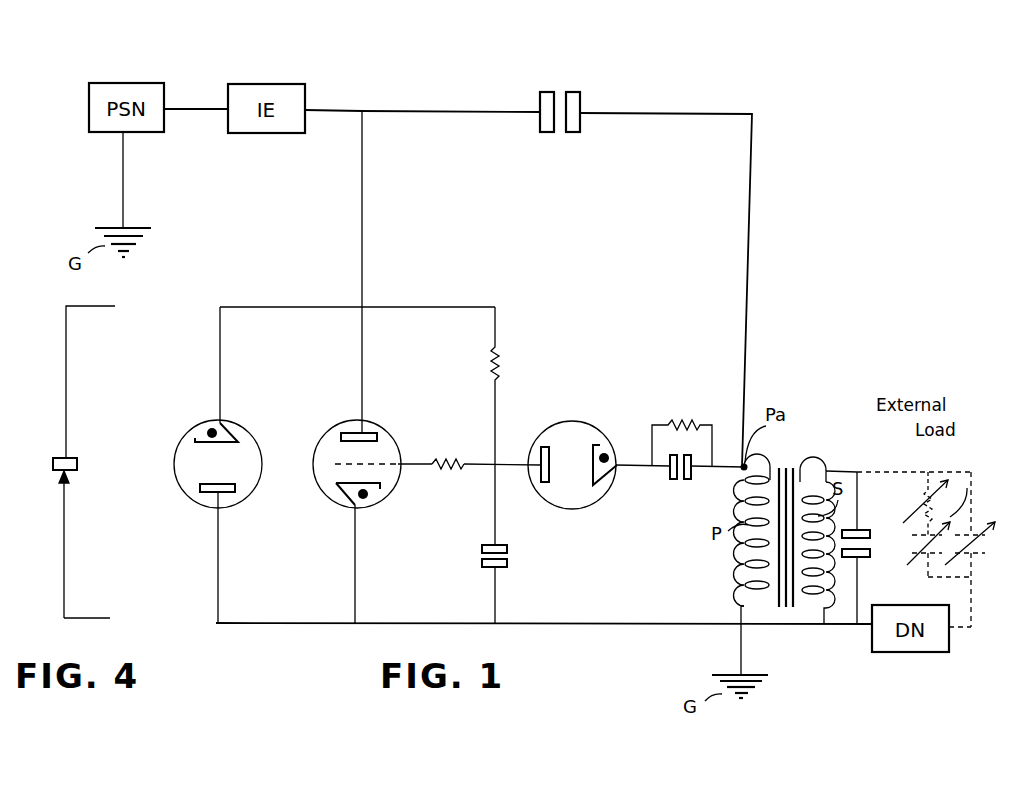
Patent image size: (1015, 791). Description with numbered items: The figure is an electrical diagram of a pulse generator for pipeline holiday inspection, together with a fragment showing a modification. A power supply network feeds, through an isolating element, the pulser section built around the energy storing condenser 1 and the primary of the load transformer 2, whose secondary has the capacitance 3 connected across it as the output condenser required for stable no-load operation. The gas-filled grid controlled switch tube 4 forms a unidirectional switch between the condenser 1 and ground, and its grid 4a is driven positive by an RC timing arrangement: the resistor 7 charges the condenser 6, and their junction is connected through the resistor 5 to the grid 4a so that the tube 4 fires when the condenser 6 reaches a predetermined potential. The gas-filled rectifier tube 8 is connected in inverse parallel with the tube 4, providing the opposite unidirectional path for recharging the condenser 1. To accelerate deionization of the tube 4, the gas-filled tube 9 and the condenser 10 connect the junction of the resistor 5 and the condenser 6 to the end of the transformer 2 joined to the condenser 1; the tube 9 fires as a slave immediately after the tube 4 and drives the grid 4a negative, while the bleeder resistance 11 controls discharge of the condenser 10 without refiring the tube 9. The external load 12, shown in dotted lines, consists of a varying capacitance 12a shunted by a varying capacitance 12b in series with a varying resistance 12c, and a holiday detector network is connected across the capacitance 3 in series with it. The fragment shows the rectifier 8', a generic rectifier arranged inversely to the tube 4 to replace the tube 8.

In FIG. 1, the energy storing condenser 1 is at (560, 135).
In FIG. 1, the load transformer 2 is at (790, 460).
In FIG. 1, the capacitance 3 is at (880, 540).
In FIG. 1, the gas-filled grid controlled switch tube 4 is at (393, 428).
In FIG. 1, the grid 4a is at (335, 462).
In FIG. 1, the resistor 5 is at (448, 455).
In FIG. 1, the condenser 6 is at (475, 556).
In FIG. 1, the resistor 7 is at (492, 363).
In FIG. 1, the gas-filled rectifier tube 8 is at (211, 510).
In FIG. 4, the rectifier 8' is at (51, 449).
In FIG. 1, the gas-filled tube 9 is at (598, 505).
In FIG. 1, the condenser 10 is at (680, 483).
In FIG. 1, the bleeder resistance 11 is at (688, 420).
In FIG. 1, the external load 12 is at (936, 538).
In FIG. 1, the varying capacitance 12a is at (990, 548).
In FIG. 1, the varying capacitance 12b is at (922, 565).
In FIG. 1, the varying resistance 12c is at (918, 505).